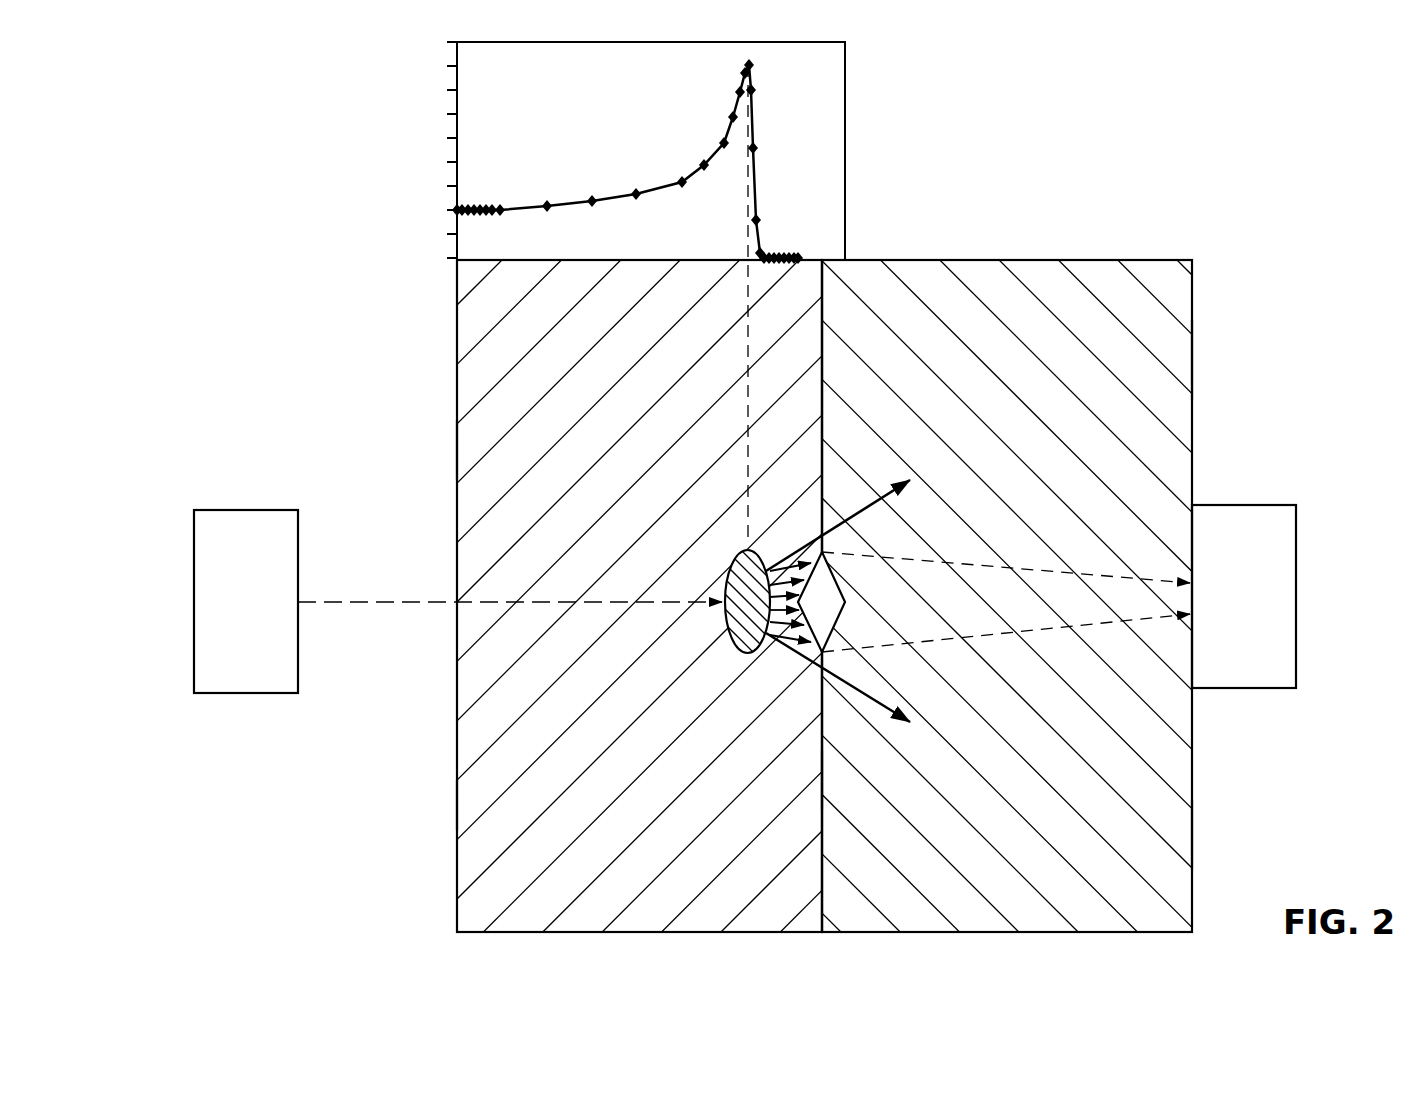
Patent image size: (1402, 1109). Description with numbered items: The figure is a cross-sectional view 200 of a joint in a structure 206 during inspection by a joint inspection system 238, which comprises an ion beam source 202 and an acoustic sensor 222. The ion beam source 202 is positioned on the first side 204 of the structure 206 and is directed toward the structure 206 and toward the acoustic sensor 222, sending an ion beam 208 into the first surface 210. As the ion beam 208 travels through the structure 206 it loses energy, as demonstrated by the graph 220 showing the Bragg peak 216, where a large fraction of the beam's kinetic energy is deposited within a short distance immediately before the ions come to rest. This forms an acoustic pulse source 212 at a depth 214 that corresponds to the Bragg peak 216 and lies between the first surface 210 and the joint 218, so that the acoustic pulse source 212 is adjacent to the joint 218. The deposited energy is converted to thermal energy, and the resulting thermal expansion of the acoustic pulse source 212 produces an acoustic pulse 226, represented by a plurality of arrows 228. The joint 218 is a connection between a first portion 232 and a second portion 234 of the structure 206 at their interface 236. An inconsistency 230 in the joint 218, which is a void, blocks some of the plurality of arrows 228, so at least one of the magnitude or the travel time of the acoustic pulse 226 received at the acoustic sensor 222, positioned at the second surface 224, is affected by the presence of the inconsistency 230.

The view 200 is at (1160, 125).
The ion beam source 202 is at (245, 510).
The first side 204 is at (403, 350).
The structure 206 is at (983, 271).
The ion beam 208 is at (385, 602).
The first surface 210 is at (457, 450).
The acoustic pulse source 212 is at (727, 618).
The depth 214 is at (746, 417).
The Bragg peak 216 is at (757, 62).
The joint 218 is at (823, 367).
The graph 220 is at (848, 150).
The acoustic sensor 222 is at (1243, 505).
The second surface 224 is at (1193, 360).
The acoustic pulse 226 is at (808, 540).
The plurality of arrows 228 is at (795, 660).
The inconsistency 230 is at (846, 604).
The first portion 232 is at (467, 803).
The second portion 234 is at (1185, 835).
The interface 236 is at (822, 780).
The joint inspection system 238 is at (197, 397).